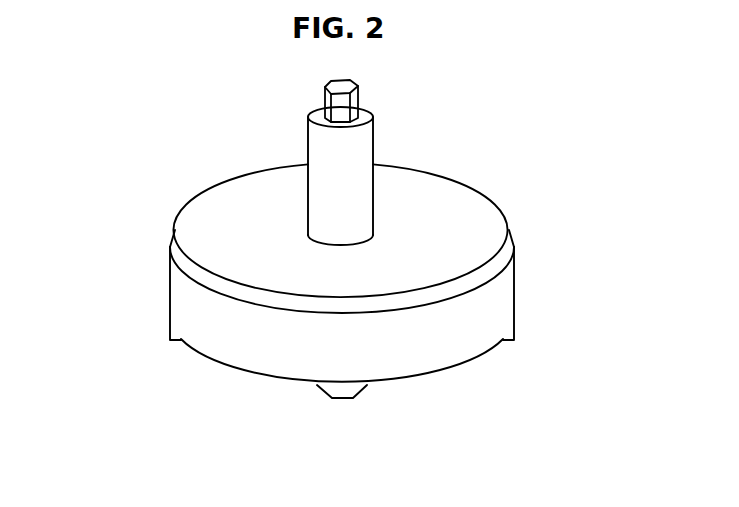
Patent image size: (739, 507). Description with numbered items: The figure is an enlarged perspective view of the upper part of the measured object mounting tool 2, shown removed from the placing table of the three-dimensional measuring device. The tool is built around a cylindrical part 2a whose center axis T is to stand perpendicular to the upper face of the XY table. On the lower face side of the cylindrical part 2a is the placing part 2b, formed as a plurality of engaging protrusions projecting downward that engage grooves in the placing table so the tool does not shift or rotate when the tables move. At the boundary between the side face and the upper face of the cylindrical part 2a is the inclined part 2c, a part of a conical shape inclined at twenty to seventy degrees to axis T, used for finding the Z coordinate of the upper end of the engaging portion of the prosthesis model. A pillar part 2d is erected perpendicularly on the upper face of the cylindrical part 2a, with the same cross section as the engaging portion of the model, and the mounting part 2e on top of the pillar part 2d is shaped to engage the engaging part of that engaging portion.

The measured object mounting tool 2 is at (152, 205).
The cylindrical part 2a is at (500, 302).
The placing part 2b is at (342, 391).
The inclined part 2c is at (507, 233).
The pillar part 2d is at (353, 152).
The mounting part 2e is at (341, 107).